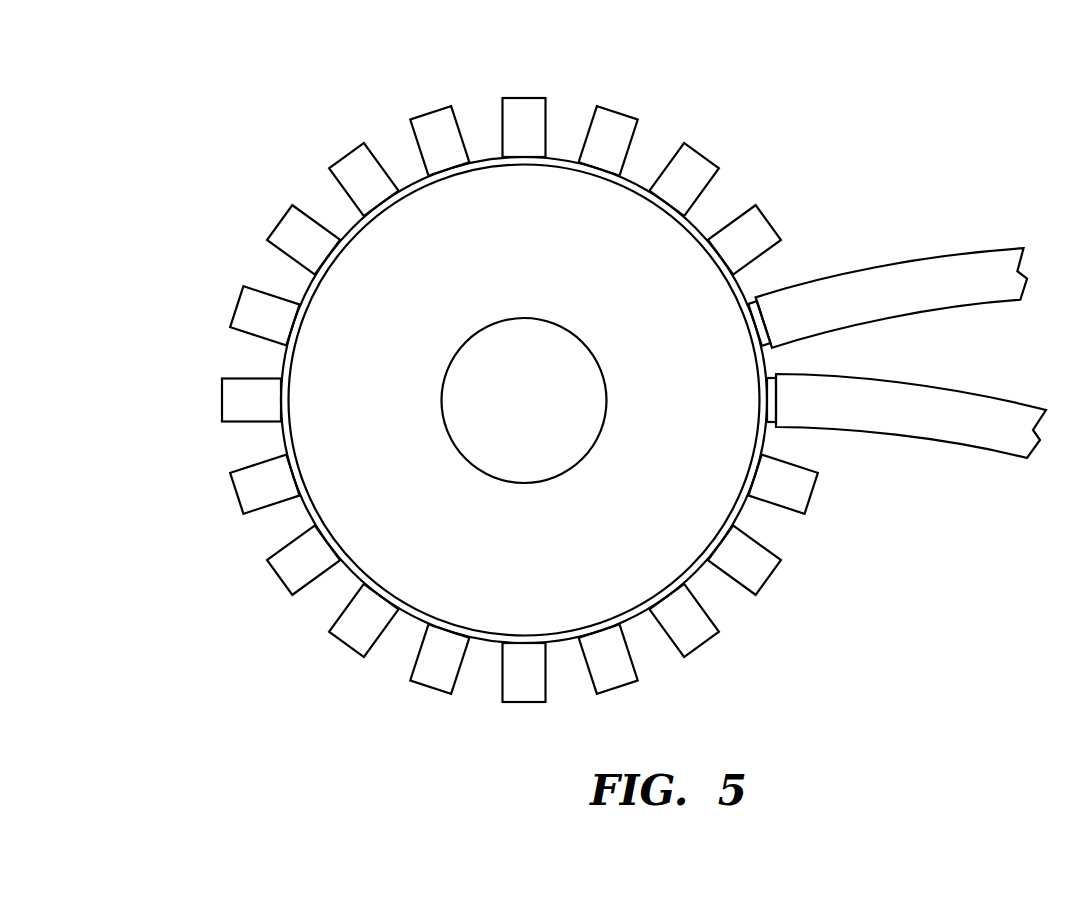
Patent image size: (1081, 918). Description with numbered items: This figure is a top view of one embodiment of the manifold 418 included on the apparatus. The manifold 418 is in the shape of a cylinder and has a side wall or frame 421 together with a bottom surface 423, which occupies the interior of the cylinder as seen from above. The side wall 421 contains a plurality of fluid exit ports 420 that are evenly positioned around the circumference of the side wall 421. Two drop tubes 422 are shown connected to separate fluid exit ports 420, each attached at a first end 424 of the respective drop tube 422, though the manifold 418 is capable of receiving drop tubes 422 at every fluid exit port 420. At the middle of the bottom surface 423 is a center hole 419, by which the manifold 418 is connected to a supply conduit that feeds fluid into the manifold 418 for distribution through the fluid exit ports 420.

The manifold 418 is at (598, 365).
The center hole 419 is at (573, 365).
The fluid exit ports 420 is at (613, 122).
The side wall 421 is at (287, 363).
The drop tubes 422 is at (960, 263).
The bottom surface 423 is at (545, 254).
The first ends 424 is at (772, 284).